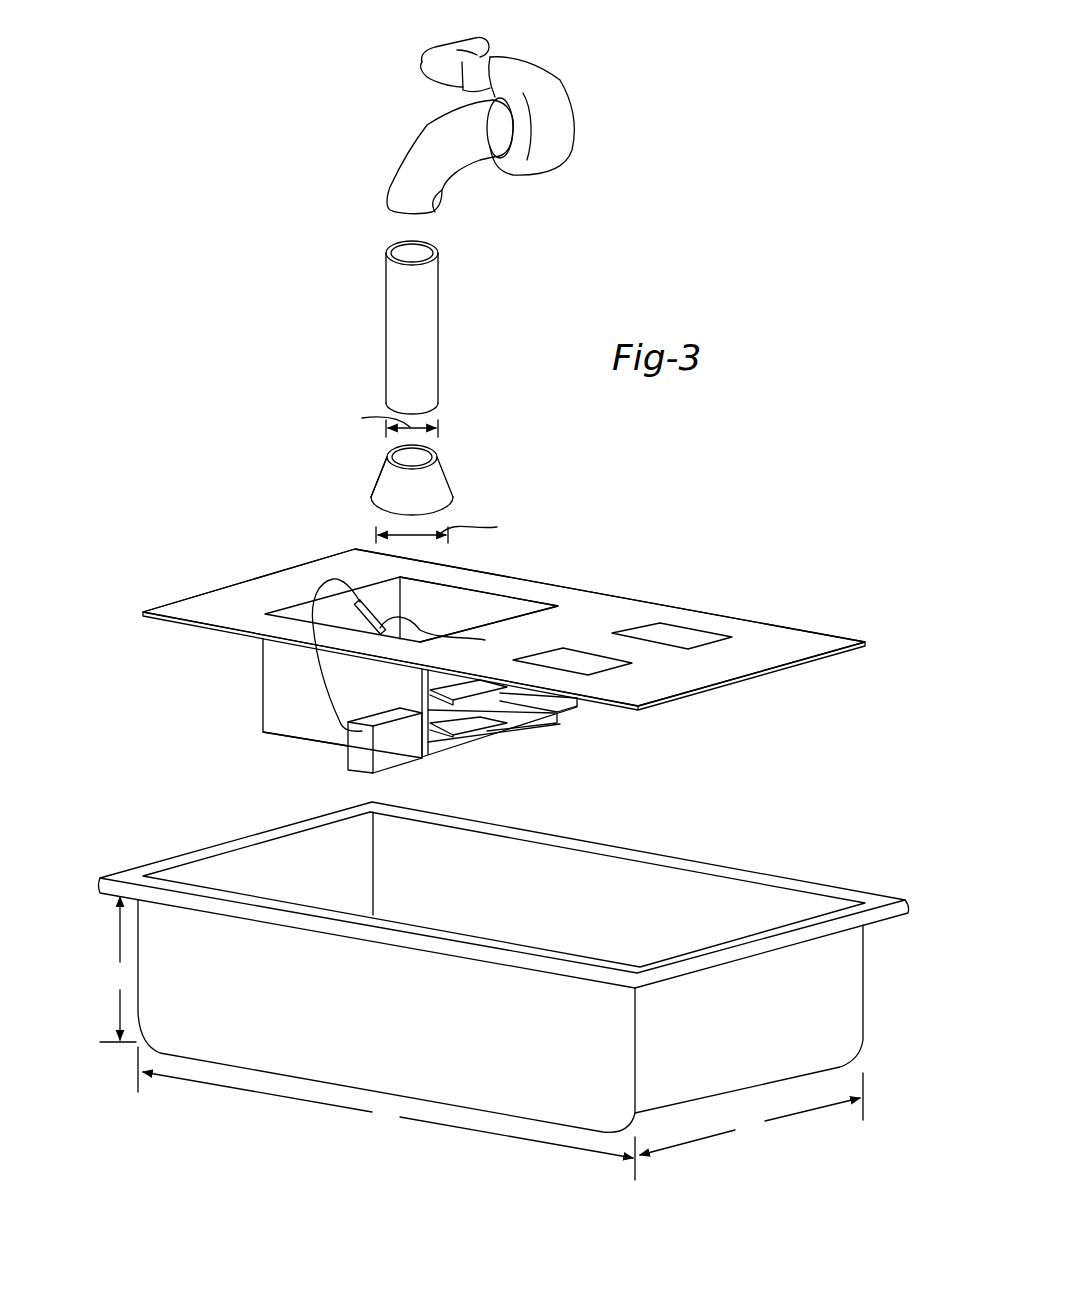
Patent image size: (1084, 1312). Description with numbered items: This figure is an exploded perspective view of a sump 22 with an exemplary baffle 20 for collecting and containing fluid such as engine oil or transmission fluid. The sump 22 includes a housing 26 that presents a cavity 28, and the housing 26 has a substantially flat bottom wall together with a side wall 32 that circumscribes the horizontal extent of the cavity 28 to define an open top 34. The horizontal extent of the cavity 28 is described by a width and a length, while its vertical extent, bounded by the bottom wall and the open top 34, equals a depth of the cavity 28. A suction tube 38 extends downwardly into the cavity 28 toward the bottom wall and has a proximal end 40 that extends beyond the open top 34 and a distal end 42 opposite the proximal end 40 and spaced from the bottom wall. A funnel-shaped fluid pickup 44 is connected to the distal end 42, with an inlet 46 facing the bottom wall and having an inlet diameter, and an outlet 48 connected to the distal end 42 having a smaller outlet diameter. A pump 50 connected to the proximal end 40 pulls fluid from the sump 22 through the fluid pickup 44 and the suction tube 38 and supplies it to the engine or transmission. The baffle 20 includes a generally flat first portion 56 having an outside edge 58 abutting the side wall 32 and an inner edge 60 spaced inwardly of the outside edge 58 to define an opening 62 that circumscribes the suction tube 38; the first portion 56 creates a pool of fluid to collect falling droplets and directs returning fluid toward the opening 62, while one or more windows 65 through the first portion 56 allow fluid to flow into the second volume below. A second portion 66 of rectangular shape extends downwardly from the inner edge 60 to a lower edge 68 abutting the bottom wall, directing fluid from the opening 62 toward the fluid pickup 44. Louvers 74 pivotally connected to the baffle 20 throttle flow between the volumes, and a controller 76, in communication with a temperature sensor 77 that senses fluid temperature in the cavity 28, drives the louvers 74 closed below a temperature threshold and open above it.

The baffle 20 is at (803, 690).
The sump 22 is at (872, 1044).
The housing 26 is at (848, 888).
The cavity 28 is at (255, 876).
The side wall 32 is at (842, 993).
The open top 34 is at (672, 842).
The suction tube 38 is at (412, 308).
The proximal end 40 is at (452, 242).
The distal end 42 is at (453, 411).
The fluid pickup 44 is at (382, 486).
The inlet 46 is at (372, 502).
The outlet 48 is at (418, 460).
The pump 50 is at (553, 127).
The first portion 56 is at (222, 598).
The outside edge 58 is at (797, 618).
The inner edge 60 is at (295, 606).
The opening 62 is at (470, 612).
The windows 65 is at (655, 635).
The second portion 66 is at (277, 670).
The lower edge 68 is at (288, 737).
The louvers 74 is at (525, 708).
The controller 76 is at (385, 755).
The temperature sensor 77 is at (412, 655).